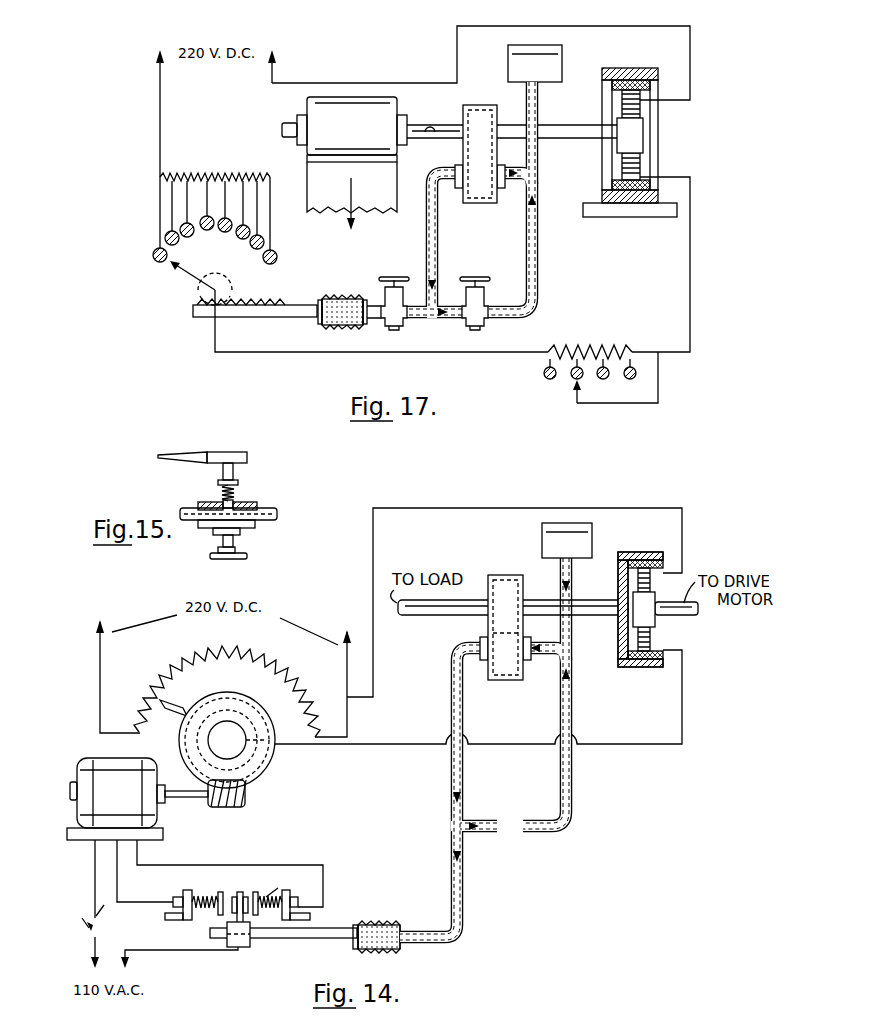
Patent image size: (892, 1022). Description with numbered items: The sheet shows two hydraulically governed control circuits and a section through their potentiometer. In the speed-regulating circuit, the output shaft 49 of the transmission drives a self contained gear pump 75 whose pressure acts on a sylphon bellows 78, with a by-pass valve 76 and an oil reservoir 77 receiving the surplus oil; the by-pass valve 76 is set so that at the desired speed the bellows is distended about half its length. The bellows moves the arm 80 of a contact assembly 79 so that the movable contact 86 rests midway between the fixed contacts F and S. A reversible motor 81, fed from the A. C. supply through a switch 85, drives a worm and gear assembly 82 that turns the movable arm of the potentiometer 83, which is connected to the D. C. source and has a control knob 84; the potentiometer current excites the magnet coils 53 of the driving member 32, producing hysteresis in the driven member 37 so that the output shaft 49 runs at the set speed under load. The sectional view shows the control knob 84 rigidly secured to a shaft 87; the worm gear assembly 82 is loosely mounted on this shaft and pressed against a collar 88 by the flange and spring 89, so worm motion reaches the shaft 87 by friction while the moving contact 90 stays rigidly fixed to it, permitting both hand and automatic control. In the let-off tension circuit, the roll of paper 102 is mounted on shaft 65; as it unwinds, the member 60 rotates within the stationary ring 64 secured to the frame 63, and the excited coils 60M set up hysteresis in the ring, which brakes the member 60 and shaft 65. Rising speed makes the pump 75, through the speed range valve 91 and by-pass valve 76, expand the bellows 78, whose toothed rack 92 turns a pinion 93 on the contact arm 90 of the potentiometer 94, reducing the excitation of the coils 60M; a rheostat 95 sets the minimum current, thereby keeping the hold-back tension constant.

In FIG. 17, the potentiometer 94 is at (215, 207).
In FIG. 17, the roll of paper 102 is at (352, 163).
In FIG. 17, the shaft 65 is at (432, 130).
In FIG. 17, the oil reservoir 77 is at (541, 95).
In FIG. 14, the oil reservoir 77 is at (594, 546).
In FIG. 17, the gear pump 75 is at (482, 206).
In FIG. 14, the gear pump 75 is at (506, 672).
In FIG. 17, the frame 63 is at (655, 70).
In FIG. 17, the stationary ring 64 is at (652, 85).
In FIG. 17, the rotating member 60 is at (645, 133).
In FIG. 17, the coils 60M is at (643, 166).
In FIG. 17, the movable contact arm 90 is at (190, 277).
In FIG. 15, the movable contact arm 90 is at (181, 454).
In FIG. 14, the movable contact arm 90 is at (182, 705).
In FIG. 17, the pinion 93 is at (232, 288).
In FIG. 17, the toothed rack 92 is at (264, 305).
In FIG. 17, the sylphon bellows 78 is at (351, 298).
In FIG. 14, the sylphon bellows 78 is at (381, 920).
In FIG. 17, the speed range valve 91 is at (400, 302).
In FIG. 17, the by-pass valve 76 is at (488, 305).
In FIG. 17, the rheostat 95 is at (595, 377).
In FIG. 15, the flange and spring 89 is at (240, 483).
In FIG. 15, the worm and gear assembly 82 is at (278, 516).
In FIG. 14, the worm and gear assembly 82 is at (268, 776).
In FIG. 15, the collar 88 is at (257, 526).
In FIG. 15, the shaft 87 is at (237, 550).
In FIG. 15, the control knob 84 is at (212, 556).
In FIG. 14, the control knob 84 is at (236, 740).
In FIG. 14, the potentiometer 83 is at (180, 666).
In FIG. 14, the reversible motor 81 is at (73, 781).
In FIG. 14, the contact assembly 79 is at (270, 868).
In FIG. 14, the movable contact 86 is at (242, 892).
In FIG. 14, the switch 85 is at (81, 936).
In FIG. 14, the movable arm 80 is at (299, 940).
In FIG. 14, the output shaft 49 is at (588, 618).
In FIG. 14, the magnet coils 53 is at (651, 641).
In FIG. 14, the driven member 37 is at (626, 668).
In FIG. 14, the driving member 32 is at (663, 668).